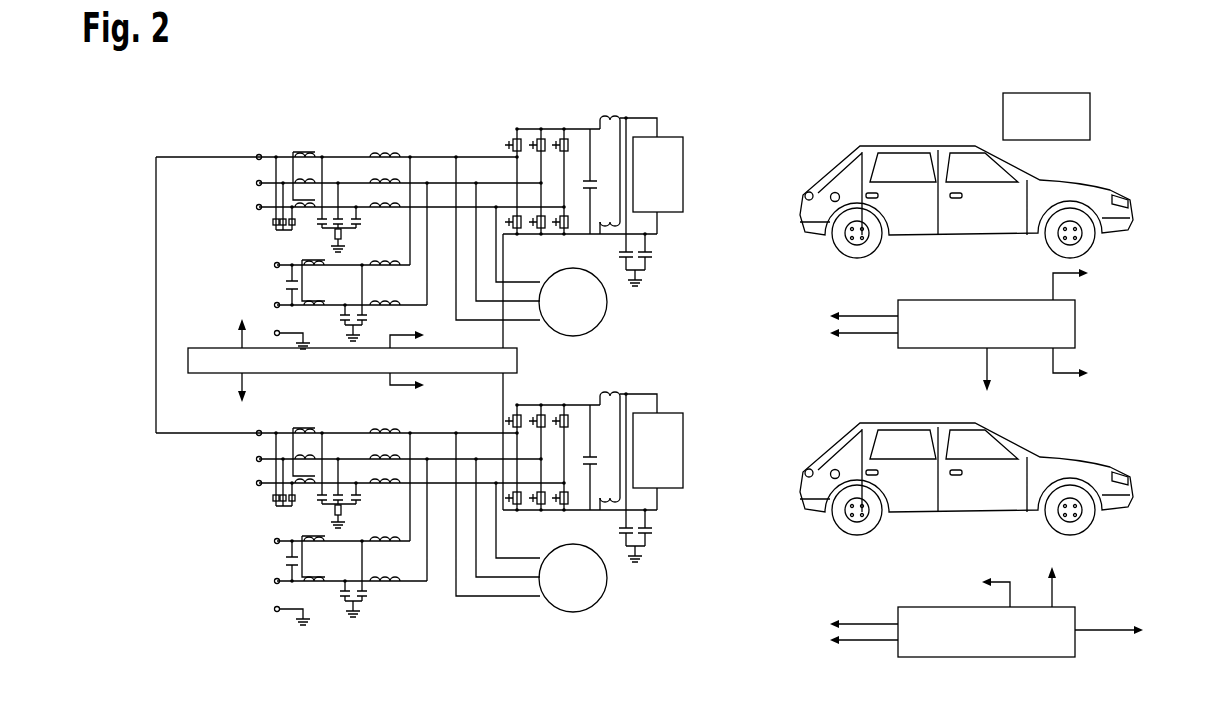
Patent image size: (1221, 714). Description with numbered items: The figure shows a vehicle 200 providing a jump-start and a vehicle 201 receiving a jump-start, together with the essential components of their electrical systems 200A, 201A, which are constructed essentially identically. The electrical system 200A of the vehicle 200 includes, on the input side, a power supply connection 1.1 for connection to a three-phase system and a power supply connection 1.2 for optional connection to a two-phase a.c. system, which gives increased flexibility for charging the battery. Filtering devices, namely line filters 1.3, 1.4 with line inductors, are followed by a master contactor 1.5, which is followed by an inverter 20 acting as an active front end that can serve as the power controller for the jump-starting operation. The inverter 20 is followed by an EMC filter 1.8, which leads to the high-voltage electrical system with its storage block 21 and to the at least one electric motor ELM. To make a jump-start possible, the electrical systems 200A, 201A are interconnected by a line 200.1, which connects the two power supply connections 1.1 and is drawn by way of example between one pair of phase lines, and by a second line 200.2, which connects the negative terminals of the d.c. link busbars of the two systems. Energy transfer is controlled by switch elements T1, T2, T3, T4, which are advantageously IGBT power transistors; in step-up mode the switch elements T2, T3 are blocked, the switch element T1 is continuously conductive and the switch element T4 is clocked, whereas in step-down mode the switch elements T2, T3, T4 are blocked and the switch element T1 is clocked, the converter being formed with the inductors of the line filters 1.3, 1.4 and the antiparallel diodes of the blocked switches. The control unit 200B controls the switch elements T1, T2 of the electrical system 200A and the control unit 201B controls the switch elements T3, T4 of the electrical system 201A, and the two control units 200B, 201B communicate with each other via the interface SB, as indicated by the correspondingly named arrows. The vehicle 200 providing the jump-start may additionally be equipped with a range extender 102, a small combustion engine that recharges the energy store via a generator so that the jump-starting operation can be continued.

The line 200.1 is at (155, 233).
The power supply connection 1.1 is at (287, 169).
The power supply connection 1.2 is at (333, 304).
The line filter 1.3 is at (341, 241).
The line filter 1.4 is at (381, 205).
The master contactor 1.5 is at (474, 214).
The inverter 20 is at (580, 159).
The EMC filter 1.8 is at (625, 184).
The energy storage / battery block 21 is at (672, 156).
The second line 200.2 is at (503, 258).
The electric motor ELM is at (592, 308).
The interface SB is at (323, 375).
The electrical system 200A is at (380, 71).
The control unit 200B is at (1097, 321).
The electrical system 201A is at (383, 688).
The control unit 201B is at (1108, 668).
The range extender 102 is at (1065, 128).
The vehicle providing a jump-start 200 is at (966, 202).
The vehicle receiving a jump-start 201 is at (966, 479).
The switch element T1 is at (850, 313).
The switch element T2 is at (850, 340).
The switch element T3 is at (850, 623).
The switch element T4 is at (850, 647).